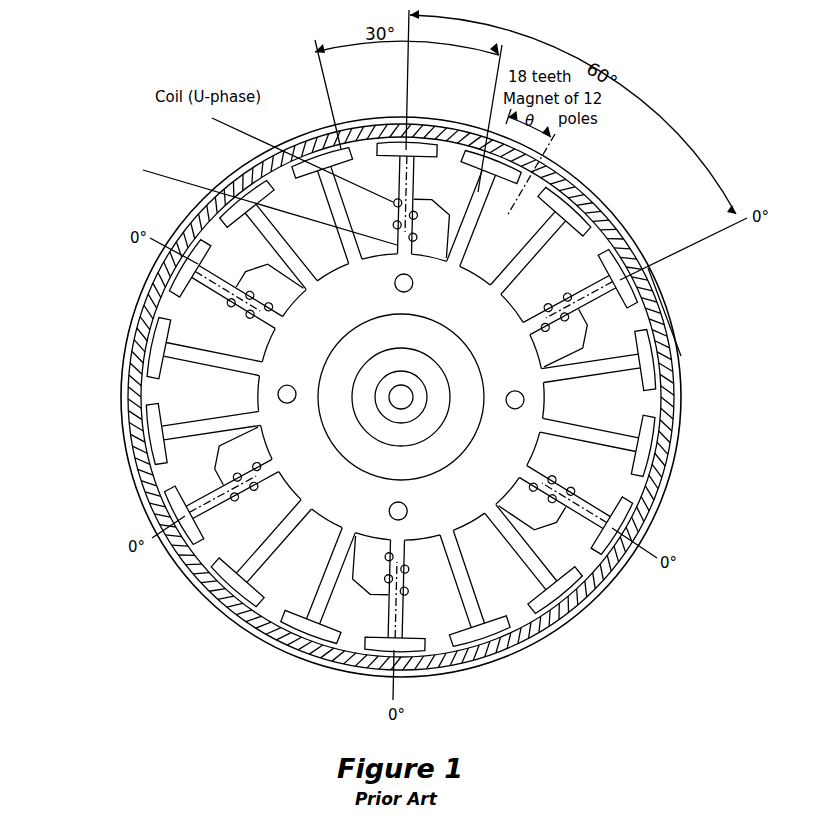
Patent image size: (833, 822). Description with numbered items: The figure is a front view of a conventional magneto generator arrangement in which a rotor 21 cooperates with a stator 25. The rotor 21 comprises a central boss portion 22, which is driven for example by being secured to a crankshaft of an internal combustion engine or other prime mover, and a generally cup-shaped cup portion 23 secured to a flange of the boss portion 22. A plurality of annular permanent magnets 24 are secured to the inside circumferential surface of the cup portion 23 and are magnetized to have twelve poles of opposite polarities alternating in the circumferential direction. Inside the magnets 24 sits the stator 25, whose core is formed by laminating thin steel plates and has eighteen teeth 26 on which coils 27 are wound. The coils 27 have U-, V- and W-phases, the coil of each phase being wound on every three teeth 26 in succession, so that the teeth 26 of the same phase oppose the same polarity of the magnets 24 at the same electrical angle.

The rotor 21 is at (681, 355).
The boss portion 22 is at (370, 352).
The cup portion 23 is at (667, 308).
The permanent magnets 24 is at (443, 148).
The stator 25 is at (471, 364).
The teeth 26 is at (762, 415).
The coils 27 is at (390, 201).